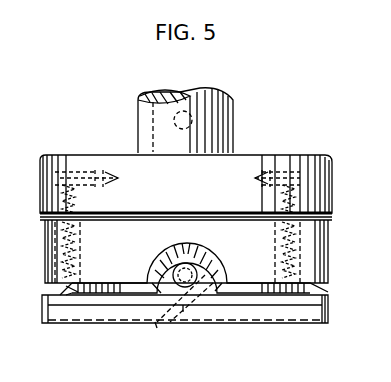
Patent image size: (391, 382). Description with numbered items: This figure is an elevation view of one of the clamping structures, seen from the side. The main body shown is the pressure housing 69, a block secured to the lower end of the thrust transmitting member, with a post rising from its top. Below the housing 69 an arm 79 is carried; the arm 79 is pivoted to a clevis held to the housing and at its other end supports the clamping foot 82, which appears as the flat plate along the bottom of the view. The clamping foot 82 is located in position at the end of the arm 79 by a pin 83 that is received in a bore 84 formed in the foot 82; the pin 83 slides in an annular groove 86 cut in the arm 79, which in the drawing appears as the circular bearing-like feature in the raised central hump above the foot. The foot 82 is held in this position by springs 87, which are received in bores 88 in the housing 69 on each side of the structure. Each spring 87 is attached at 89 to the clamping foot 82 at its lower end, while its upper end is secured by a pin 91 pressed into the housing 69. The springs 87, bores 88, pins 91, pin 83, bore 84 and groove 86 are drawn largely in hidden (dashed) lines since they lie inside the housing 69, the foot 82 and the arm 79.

The pressure housing 69 is at (240, 160).
The pin 91 is at (88, 168).
The spring 87 is at (92, 243).
The bore 88 is at (92, 268).
The arm 79 is at (196, 266).
The annular groove 86 is at (180, 280).
The clamping foot 82 is at (62, 325).
The spring attachment point 89 is at (72, 290).
The bore 84 is at (152, 325).
The pin 83 is at (185, 312).